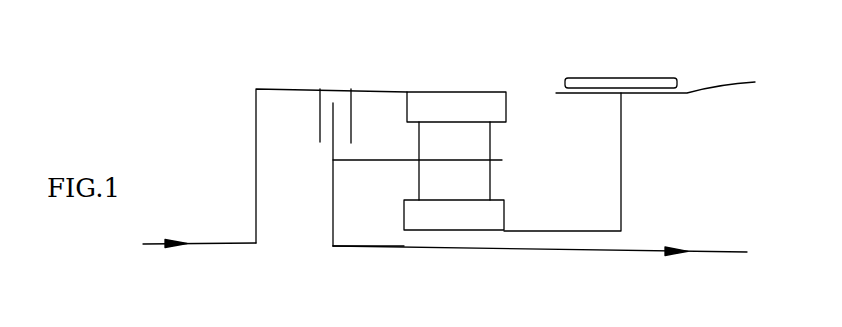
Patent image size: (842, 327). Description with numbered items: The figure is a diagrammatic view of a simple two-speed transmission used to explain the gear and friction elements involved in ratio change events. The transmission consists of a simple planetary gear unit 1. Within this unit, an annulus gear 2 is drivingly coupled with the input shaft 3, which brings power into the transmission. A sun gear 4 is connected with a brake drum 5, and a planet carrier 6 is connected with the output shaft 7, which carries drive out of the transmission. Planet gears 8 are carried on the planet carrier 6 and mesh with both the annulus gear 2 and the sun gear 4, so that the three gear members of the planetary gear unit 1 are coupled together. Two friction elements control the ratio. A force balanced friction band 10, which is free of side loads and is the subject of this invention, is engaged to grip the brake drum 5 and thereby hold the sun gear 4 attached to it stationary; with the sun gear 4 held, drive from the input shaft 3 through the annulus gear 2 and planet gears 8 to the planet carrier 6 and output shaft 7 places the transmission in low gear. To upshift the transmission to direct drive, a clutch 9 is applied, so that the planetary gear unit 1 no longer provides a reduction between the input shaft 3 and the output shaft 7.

The planetary gear unit 1 is at (528, 210).
The annulus gear 2 is at (455, 105).
The input shaft 3 is at (203, 243).
The sun gear 4 is at (453, 218).
The brake drum 5 is at (668, 85).
The planet carrier 6 is at (378, 160).
The output shaft 7 is at (708, 251).
The planet gears 8 is at (467, 146).
The clutch 9 is at (325, 119).
The force balanced friction band 10 is at (642, 82).